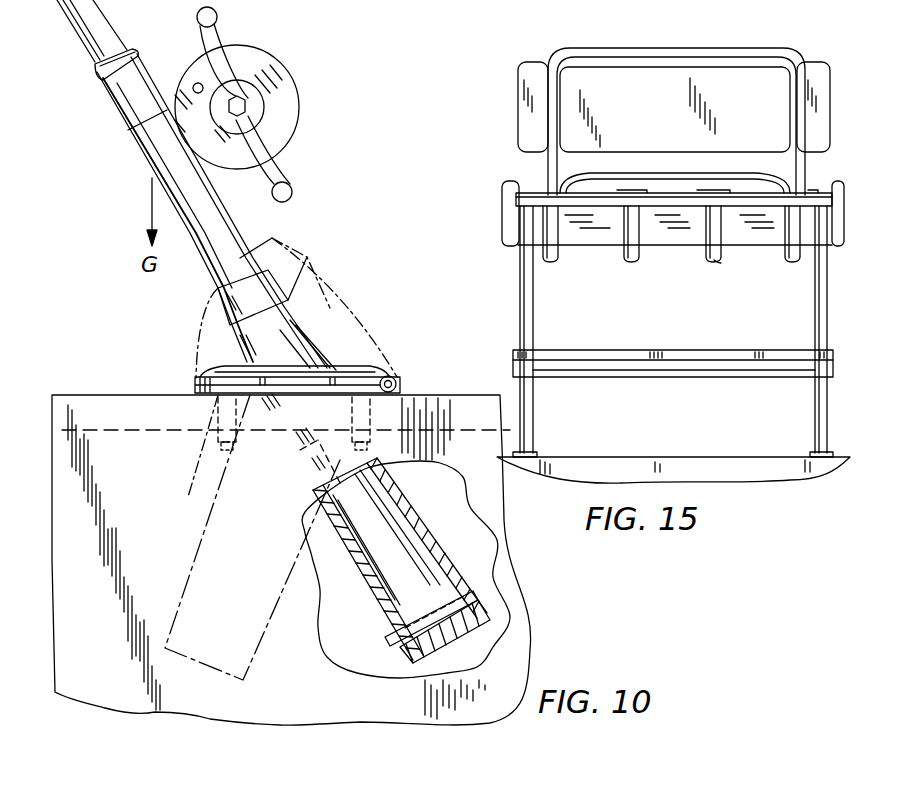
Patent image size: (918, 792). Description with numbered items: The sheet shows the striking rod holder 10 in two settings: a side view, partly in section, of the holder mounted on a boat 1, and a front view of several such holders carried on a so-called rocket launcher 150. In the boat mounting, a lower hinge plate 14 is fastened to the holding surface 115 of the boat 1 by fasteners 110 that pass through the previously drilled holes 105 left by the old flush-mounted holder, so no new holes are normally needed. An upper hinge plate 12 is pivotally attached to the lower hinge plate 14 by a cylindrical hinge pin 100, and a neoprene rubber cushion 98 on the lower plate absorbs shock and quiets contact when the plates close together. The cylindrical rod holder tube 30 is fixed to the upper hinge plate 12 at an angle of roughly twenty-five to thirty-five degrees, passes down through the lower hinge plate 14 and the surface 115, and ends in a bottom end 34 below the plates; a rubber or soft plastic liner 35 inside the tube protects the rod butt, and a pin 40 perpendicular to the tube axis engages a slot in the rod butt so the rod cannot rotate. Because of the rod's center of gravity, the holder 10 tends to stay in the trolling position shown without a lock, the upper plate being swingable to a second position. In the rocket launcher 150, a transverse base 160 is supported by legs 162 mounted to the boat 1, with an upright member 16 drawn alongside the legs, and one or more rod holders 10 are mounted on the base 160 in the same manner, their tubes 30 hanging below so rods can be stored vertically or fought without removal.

In FIG. 10, the boat 1 is at (452, 394).
In FIG. 15, the boat 1 is at (777, 482).
In FIG. 15, the striking rod holder 10 is at (550, 264).
In FIG. 10, the upper hinge plate 12 is at (198, 372).
In FIG. 15, the upper hinge plate 12 is at (640, 188).
In FIG. 10, the lower hinge plate 14 is at (198, 388).
In FIG. 15, the leg 16 is at (828, 312).
In FIG. 10, the rod holder tube 30 is at (449, 560).
In FIG. 15, the rod holder tube 30 is at (719, 263).
In FIG. 10, the bottom end 34 is at (478, 630).
In FIG. 10, the liner 35 is at (455, 545).
In FIG. 10, the pin 40 is at (480, 590).
In FIG. 10, the cushion 98 is at (212, 400).
In FIG. 10, the hinge pin 100 is at (397, 379).
In FIG. 10, the drilled holes 105 is at (200, 486).
In FIG. 10, the fasteners 110 is at (208, 438).
In FIG. 10, the holding surface 115 is at (72, 394).
In FIG. 15, the rocket launcher 150 is at (540, 62).
In FIG. 15, the base 160 is at (518, 188).
In FIG. 15, the legs 162 is at (537, 334).